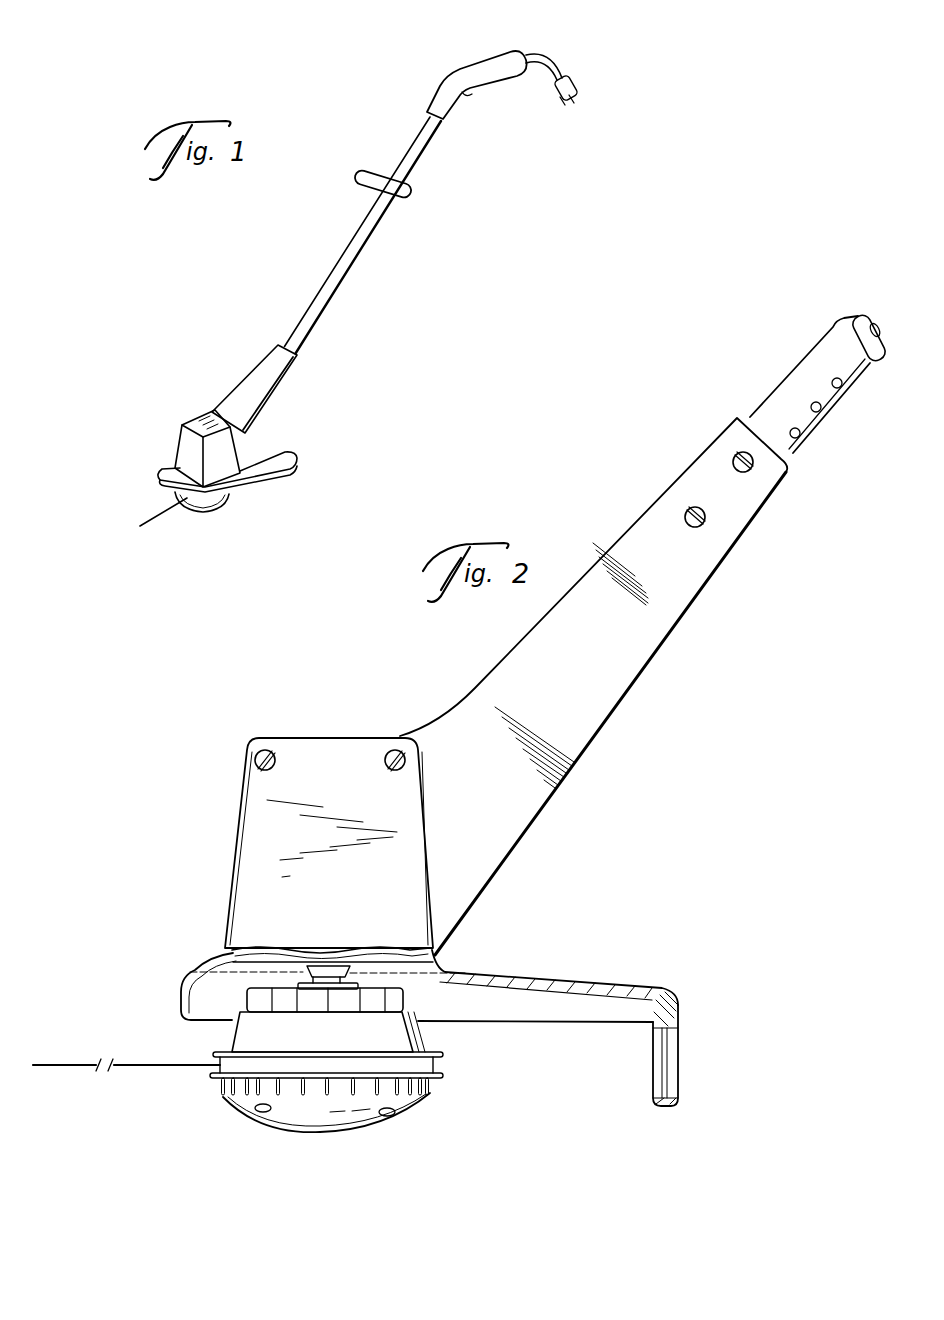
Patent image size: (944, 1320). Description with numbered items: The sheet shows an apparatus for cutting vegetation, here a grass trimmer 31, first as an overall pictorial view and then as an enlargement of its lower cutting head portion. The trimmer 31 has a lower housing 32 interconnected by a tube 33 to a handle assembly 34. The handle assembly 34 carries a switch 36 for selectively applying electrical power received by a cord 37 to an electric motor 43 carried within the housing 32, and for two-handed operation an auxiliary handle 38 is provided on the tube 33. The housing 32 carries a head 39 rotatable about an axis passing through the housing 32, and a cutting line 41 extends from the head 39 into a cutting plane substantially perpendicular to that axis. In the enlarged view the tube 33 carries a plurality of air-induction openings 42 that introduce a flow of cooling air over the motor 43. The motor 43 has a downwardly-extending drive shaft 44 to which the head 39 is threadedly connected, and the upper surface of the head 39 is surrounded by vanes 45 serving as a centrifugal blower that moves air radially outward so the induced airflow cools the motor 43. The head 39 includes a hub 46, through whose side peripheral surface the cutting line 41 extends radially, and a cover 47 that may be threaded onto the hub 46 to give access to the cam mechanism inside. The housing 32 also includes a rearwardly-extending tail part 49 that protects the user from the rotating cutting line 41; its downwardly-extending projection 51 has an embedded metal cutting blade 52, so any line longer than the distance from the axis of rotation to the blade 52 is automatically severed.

In FIG. 1, the grass trimmer 31 is at (334, 230).
In FIG. 1, the lower housing 32 is at (267, 365).
In FIG. 2, the lower housing 32 is at (655, 648).
In FIG. 1, the tube 33 is at (354, 257).
In FIG. 2, the tube 33 is at (806, 351).
In FIG. 1, the handle assembly 34 is at (488, 62).
In FIG. 1, the switch 36 is at (471, 93).
In FIG. 1, the cord 37 is at (550, 55).
In FIG. 2, the cord 37 is at (857, 318).
In FIG. 1, the auxiliary handle 38 is at (362, 177).
In FIG. 1, the head 39 is at (212, 513).
In FIG. 2, the head 39 is at (348, 1134).
In FIG. 1, the cutting line 41 is at (158, 514).
In FIG. 2, the cutting line 41 is at (130, 1072).
In FIG. 2, the air-induction openings 42 is at (800, 437).
In FIG. 2, the electric motor 43 is at (339, 972).
In FIG. 2, the drive shaft 44 is at (318, 972).
In FIG. 2, the vanes 45 is at (408, 1000).
In FIG. 2, the hub 46 is at (427, 1043).
In FIG. 2, the cover 47 is at (410, 1107).
In FIG. 1, the tail part 49 is at (283, 456).
In FIG. 2, the tail part 49 is at (629, 988).
In FIG. 2, the downwardly-extending projection 51 is at (665, 1106).
In FIG. 2, the metal cutting blade 52 is at (668, 1054).